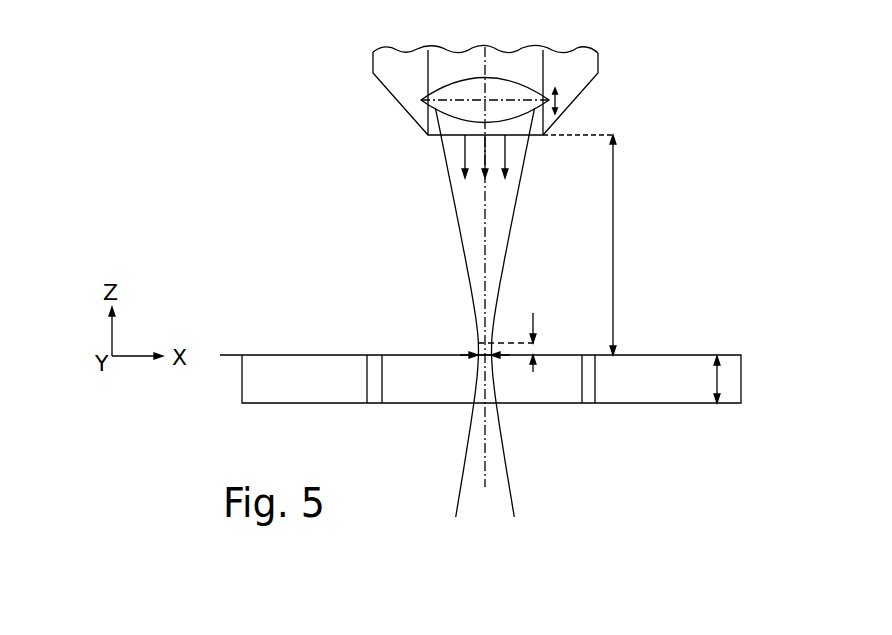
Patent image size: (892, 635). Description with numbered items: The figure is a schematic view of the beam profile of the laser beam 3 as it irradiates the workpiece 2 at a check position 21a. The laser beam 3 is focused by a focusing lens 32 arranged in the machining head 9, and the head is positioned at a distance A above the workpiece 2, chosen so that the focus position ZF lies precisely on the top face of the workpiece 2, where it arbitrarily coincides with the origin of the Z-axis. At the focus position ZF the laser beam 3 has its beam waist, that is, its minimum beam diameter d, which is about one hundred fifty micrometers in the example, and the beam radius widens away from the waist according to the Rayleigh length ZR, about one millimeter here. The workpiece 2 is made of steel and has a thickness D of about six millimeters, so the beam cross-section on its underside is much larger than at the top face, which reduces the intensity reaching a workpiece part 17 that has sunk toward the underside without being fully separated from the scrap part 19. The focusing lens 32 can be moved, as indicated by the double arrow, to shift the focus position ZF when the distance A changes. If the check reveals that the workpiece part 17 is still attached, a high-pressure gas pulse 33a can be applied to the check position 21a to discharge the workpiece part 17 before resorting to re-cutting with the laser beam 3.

The workpiece 2 is at (676, 339).
The laser beam 3 is at (447, 155).
The machining head 9 is at (580, 95).
The workpiece part 17 is at (392, 368).
The scrap part 19 is at (295, 367).
The check position 21a is at (477, 350).
The focusing lens 32 is at (460, 89).
The gas pulse 33a is at (505, 152).
The distance A is at (613, 234).
The thickness D is at (720, 382).
The minimum beam diameter d is at (516, 352).
The Rayleigh length ZR is at (534, 351).
The focus position ZF is at (227, 355).